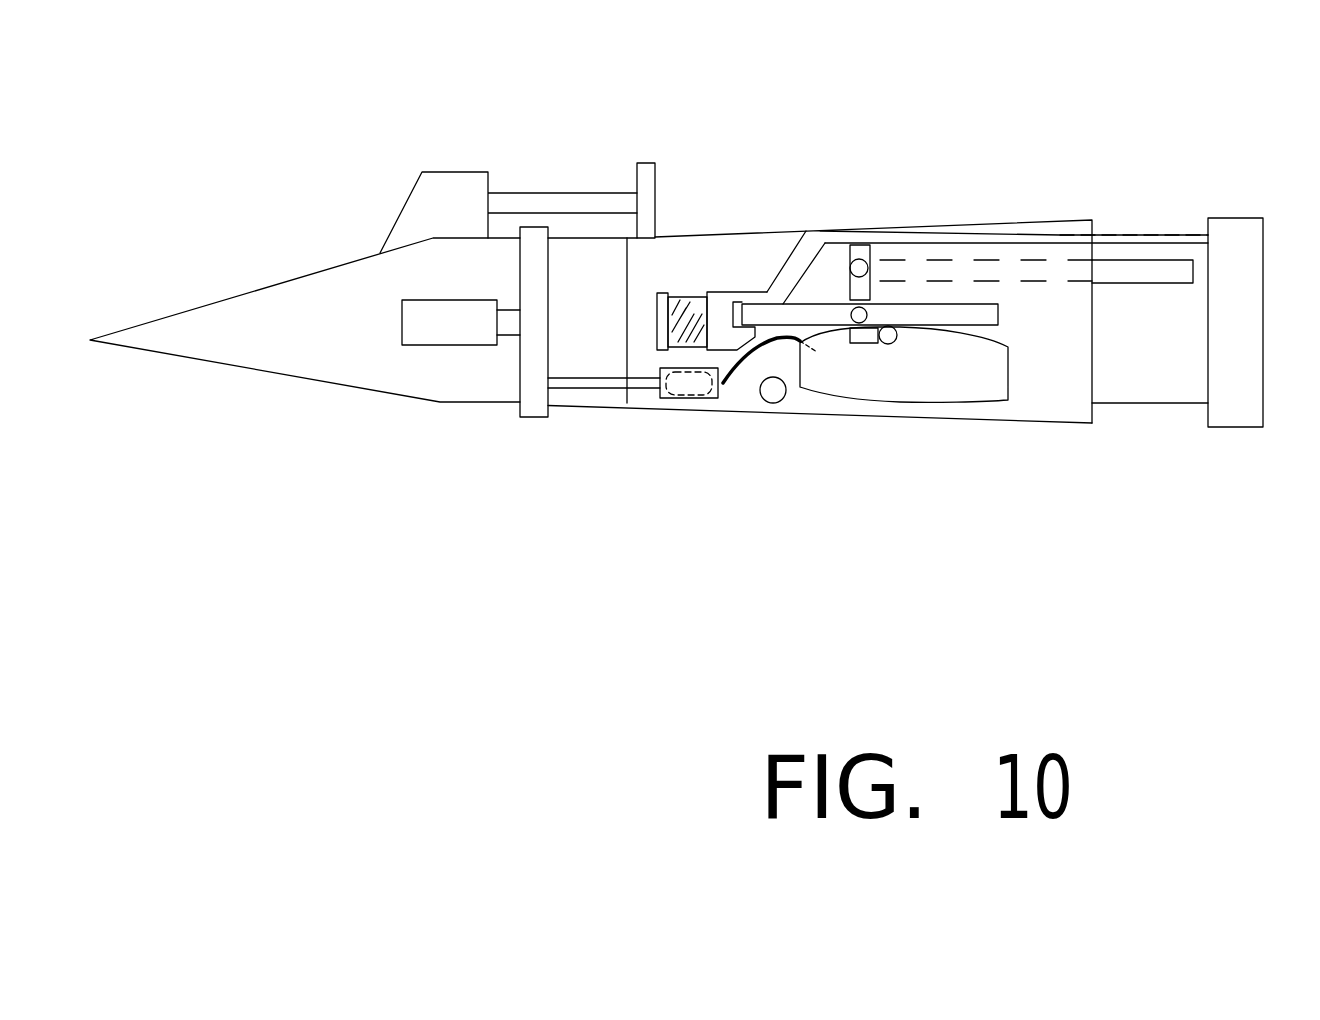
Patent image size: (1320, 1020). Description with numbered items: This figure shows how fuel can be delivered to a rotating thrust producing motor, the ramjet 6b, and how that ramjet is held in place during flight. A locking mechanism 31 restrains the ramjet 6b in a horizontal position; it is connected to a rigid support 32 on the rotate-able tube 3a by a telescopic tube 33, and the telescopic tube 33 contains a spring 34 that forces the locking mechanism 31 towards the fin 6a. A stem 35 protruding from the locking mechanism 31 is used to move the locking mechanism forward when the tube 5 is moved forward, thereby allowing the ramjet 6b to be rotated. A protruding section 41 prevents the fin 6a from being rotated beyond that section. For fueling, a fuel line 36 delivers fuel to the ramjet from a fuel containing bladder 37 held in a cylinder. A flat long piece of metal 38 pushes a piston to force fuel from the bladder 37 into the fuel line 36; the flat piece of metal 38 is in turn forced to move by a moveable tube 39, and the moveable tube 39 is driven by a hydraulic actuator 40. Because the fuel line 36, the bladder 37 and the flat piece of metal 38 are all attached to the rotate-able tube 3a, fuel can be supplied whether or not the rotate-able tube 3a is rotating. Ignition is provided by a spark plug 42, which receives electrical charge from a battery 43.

The rotate-able tube 3a is at (728, 257).
The tube 5 is at (1233, 268).
The fin 6a is at (808, 313).
The ramjet 6b is at (977, 388).
The locking mechanism 31 is at (720, 302).
The rigid support 32 is at (658, 333).
The telescopic tube 33 is at (670, 295).
The spring 34 is at (668, 315).
The stem 35 is at (918, 241).
The fuel line 36 is at (730, 370).
The fuel containing bladder 37 is at (690, 390).
The flat long piece of metal 38 is at (567, 383).
The moveable tube 39 is at (532, 390).
The hydraulic actuator 40 is at (465, 330).
The protruding section 41 is at (775, 392).
The spark plug 42 is at (897, 342).
The battery 43 is at (867, 340).